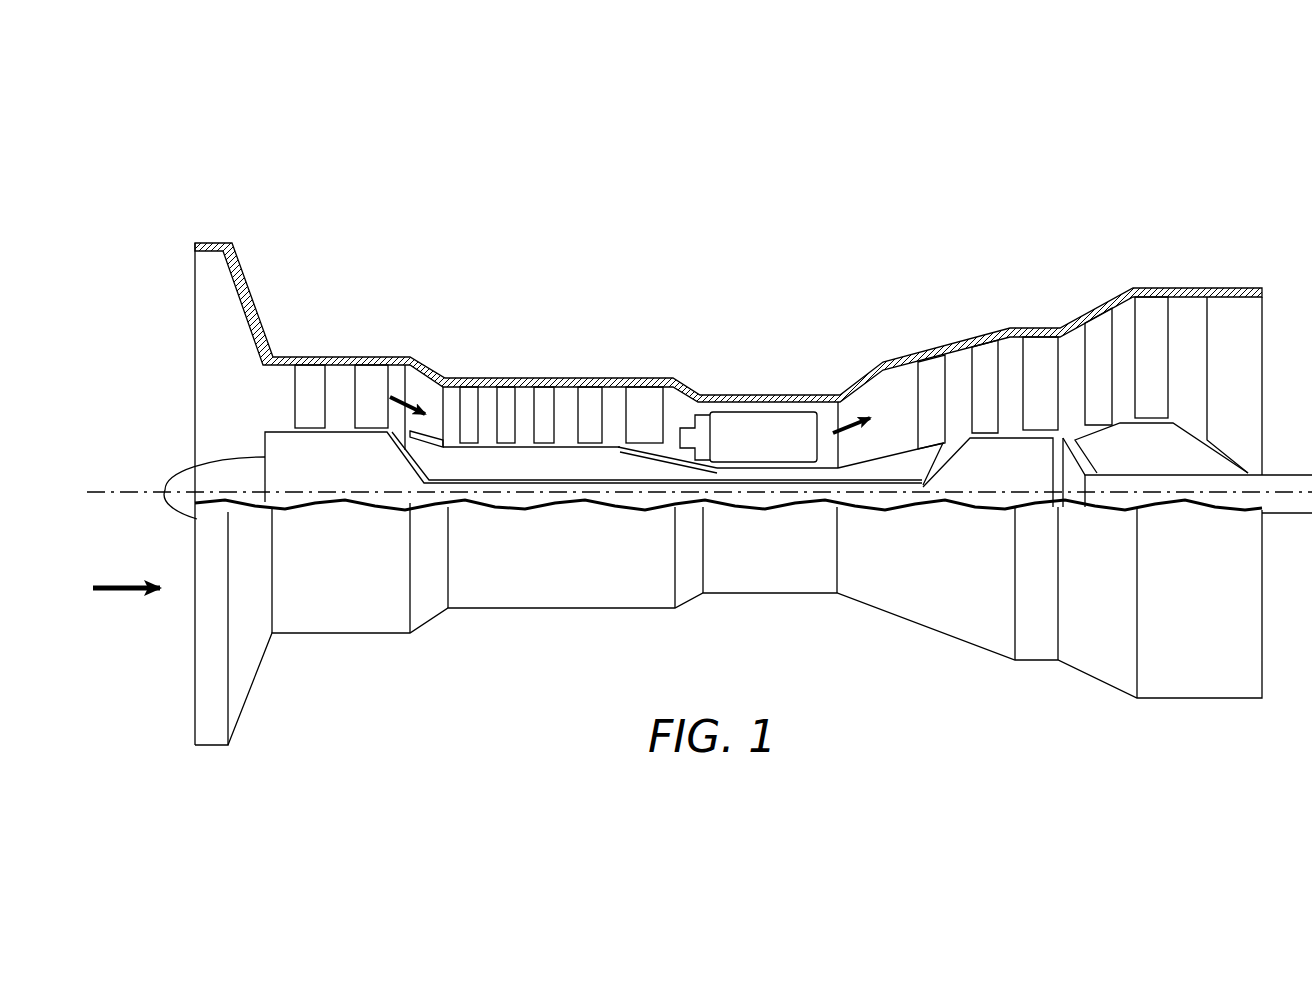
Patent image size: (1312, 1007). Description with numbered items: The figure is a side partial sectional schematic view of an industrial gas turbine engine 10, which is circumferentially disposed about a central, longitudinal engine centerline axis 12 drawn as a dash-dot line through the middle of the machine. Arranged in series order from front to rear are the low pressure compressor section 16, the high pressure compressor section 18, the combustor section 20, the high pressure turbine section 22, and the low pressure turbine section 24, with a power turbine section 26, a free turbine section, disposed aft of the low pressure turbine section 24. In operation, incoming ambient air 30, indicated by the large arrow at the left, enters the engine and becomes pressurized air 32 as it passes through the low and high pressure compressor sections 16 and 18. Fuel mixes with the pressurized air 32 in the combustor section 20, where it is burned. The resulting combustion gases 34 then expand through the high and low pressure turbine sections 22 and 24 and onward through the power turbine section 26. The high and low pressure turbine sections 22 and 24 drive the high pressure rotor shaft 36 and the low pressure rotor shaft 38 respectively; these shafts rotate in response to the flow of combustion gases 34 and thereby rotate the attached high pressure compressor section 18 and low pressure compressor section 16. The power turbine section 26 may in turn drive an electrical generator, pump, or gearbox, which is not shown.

The gas turbine engine 10 is at (838, 237).
The engine centerline axis 12 is at (131, 491).
The low pressure compressor section 16 is at (332, 338).
The high pressure compressor section 18 is at (580, 348).
The combustor section 20 is at (740, 420).
The high pressure turbine section 22 is at (940, 323).
The low pressure turbine section 24 is at (1050, 311).
The power turbine section 26 is at (1210, 283).
The incoming ambient air 30 is at (131, 585).
The pressurized air 32 is at (413, 405).
The combustion gases 34 is at (848, 410).
The high pressure rotor shaft 36 is at (762, 370).
The low pressure rotor shaft 38 is at (422, 478).